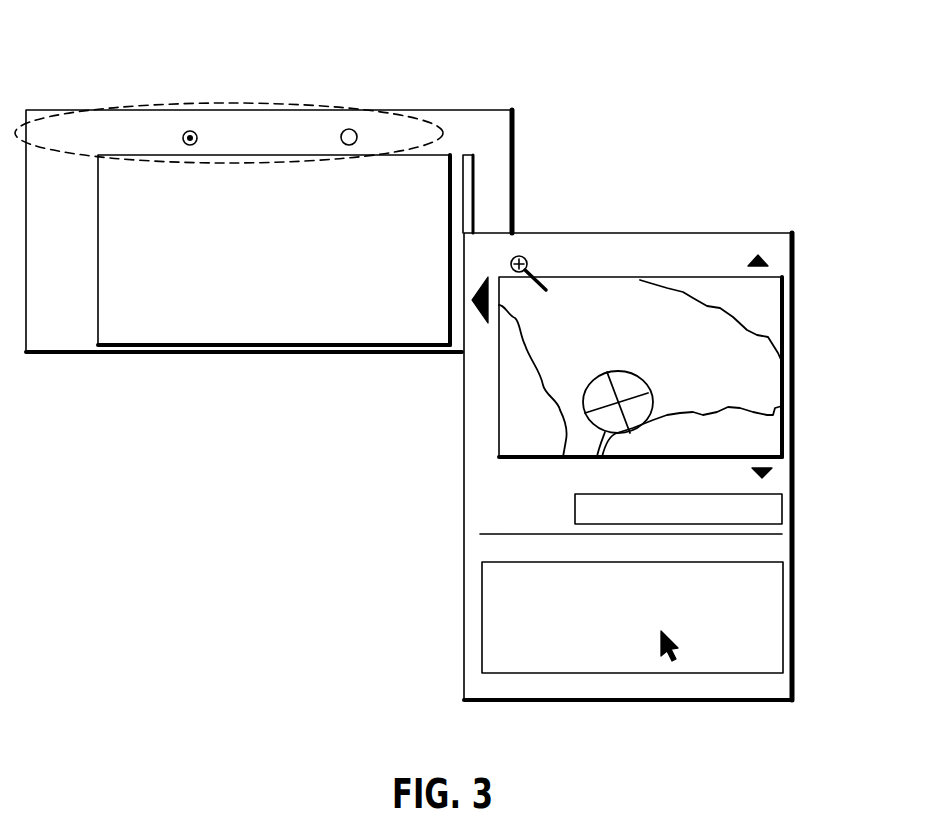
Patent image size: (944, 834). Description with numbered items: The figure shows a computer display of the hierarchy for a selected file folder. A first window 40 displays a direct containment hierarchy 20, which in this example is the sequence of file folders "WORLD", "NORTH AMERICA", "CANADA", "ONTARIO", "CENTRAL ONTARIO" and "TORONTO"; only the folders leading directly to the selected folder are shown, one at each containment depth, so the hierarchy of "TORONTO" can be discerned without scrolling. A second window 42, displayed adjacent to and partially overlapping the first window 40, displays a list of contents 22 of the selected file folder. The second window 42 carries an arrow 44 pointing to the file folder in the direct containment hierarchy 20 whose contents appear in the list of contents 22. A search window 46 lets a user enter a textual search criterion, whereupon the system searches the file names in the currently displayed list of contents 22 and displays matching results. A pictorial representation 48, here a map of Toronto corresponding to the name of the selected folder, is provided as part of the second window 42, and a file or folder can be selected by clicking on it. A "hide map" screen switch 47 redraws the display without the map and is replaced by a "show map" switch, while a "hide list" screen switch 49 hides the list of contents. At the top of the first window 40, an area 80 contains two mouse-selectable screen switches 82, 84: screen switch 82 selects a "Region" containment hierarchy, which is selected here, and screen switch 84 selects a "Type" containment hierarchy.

The direct containment hierarchy 20 is at (183, 326).
The list of contents 22 is at (760, 632).
The first window 40 is at (515, 183).
The second window 42 is at (795, 575).
The arrow 44 is at (471, 300).
The search window 46 is at (755, 510).
The "hide map" screen switch 47 is at (770, 262).
The pictorial representation 48 is at (762, 306).
The "hide list" screen switch 49 is at (775, 470).
The area of the display 80 is at (228, 100).
The screen switch 82 is at (190, 130).
The screen switch 84 is at (349, 129).